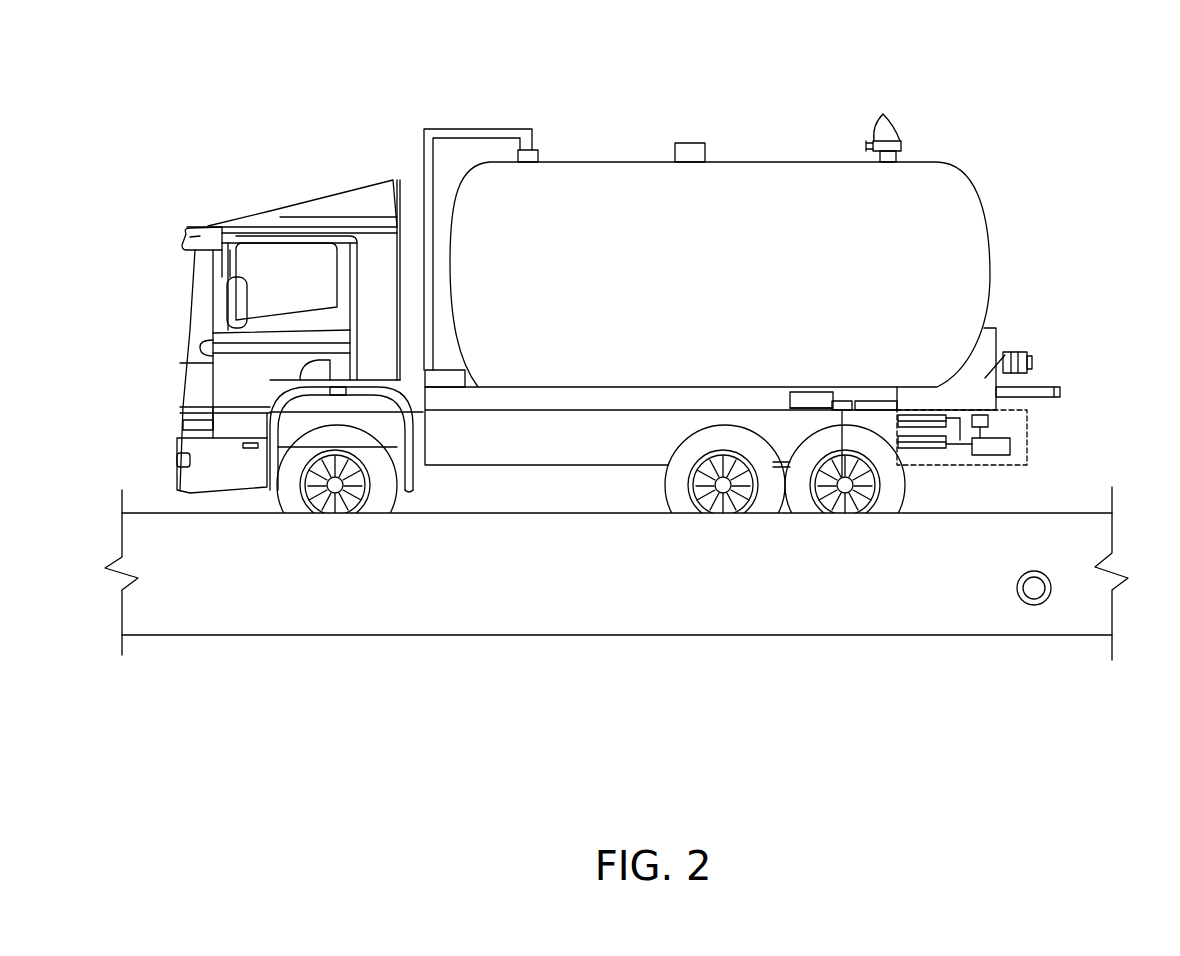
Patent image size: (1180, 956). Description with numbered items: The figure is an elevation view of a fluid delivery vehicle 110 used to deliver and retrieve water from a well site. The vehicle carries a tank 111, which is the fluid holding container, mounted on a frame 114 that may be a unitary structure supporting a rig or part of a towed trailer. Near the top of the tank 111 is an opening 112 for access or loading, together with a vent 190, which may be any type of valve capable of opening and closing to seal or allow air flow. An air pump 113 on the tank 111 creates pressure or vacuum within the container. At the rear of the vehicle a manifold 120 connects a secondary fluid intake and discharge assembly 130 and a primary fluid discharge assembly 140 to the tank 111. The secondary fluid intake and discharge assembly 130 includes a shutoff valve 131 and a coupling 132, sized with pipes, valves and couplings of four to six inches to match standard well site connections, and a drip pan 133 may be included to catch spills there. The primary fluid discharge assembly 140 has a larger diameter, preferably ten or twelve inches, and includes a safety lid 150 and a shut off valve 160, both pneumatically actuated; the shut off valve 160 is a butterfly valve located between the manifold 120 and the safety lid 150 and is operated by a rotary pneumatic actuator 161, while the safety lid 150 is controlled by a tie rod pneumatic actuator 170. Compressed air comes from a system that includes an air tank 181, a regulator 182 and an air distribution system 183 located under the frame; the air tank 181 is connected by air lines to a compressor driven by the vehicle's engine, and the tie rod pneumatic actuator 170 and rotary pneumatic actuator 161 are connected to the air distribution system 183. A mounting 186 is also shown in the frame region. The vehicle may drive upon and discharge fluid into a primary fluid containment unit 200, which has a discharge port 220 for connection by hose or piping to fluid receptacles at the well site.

The fluid delivery vehicle 110 is at (580, 135).
The tank 111 is at (790, 182).
The opening 112 is at (688, 143).
The air pump 113 is at (443, 378).
The frame 114 is at (585, 397).
The manifold 120 is at (988, 378).
The secondary fluid intake and discharge assembly 130 is at (1037, 342).
The shutoff valve 131 is at (1014, 346).
The coupling 132 is at (1030, 362).
The drip pan 133 is at (1062, 393).
The primary fluid discharge assembly 140 is at (916, 455).
The safety lid 150 is at (928, 450).
The shut off valve 160 is at (920, 420).
The rotary pneumatic actuator 161 is at (990, 421).
The tie rod pneumatic actuator 170 is at (1008, 452).
The air tank 181 is at (790, 403).
The regulator 182 is at (845, 487).
The air distribution system 183 is at (880, 410).
The mounting 186 is at (807, 412).
The vent 190 is at (883, 114).
The primary fluid containment unit 200 is at (936, 620).
The discharge port 220 is at (1034, 605).